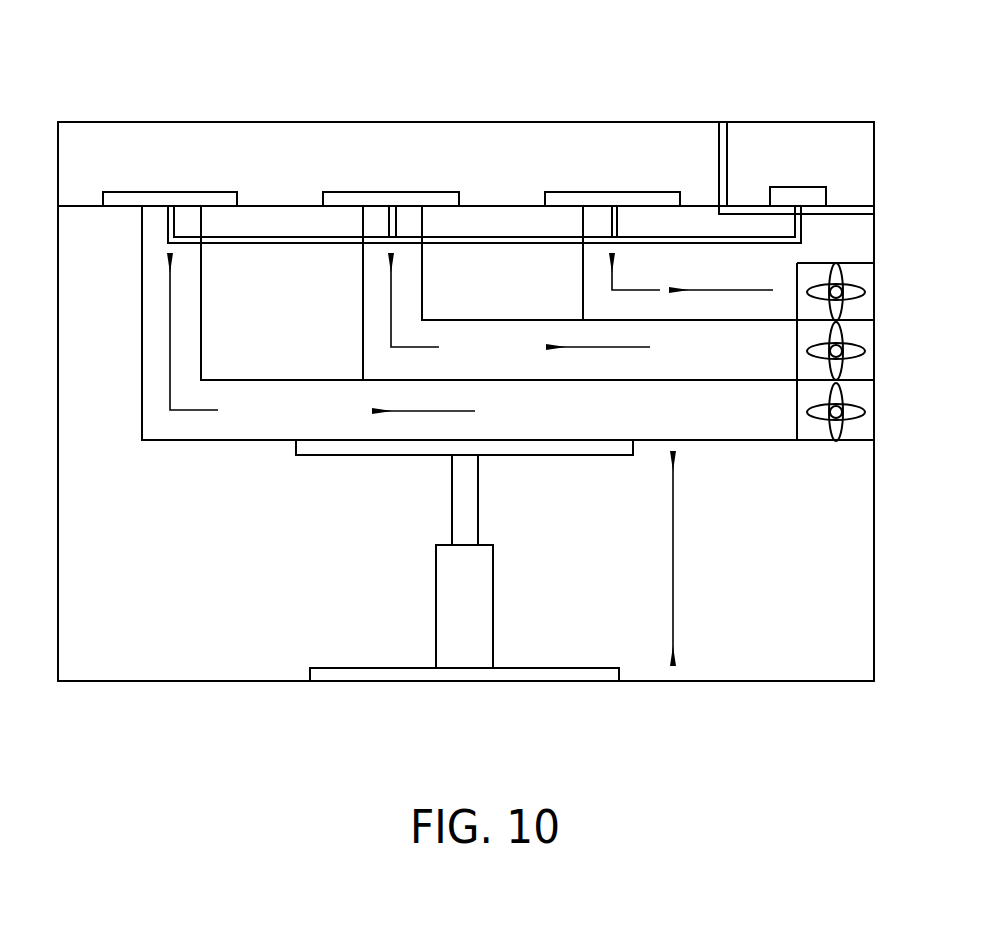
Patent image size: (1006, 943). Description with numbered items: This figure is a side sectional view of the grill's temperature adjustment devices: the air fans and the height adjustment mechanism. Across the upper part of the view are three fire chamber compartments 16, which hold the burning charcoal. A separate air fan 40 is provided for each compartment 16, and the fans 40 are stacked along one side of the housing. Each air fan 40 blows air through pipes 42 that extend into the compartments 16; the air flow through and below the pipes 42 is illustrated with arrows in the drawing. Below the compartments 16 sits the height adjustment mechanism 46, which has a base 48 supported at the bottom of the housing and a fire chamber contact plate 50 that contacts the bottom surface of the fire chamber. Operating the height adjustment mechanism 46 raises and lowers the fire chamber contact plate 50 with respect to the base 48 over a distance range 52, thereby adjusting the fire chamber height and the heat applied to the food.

The compartment 16 is at (185, 157).
The air fan 40 is at (836, 292).
The pipe 42 is at (142, 298).
The height adjustment mechanism 46 is at (445, 590).
The base 48 is at (336, 668).
The fire chamber contact plate 50 is at (337, 456).
The distance range 52 is at (673, 558).